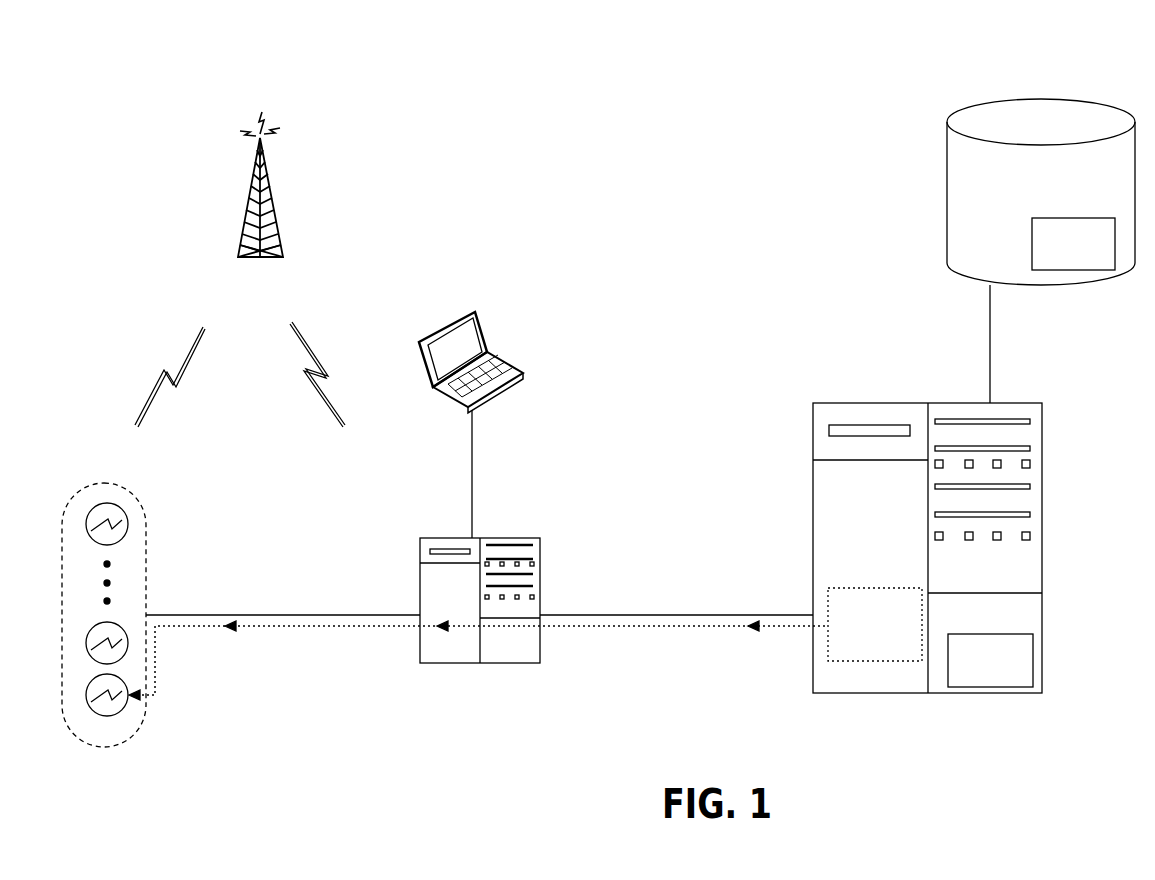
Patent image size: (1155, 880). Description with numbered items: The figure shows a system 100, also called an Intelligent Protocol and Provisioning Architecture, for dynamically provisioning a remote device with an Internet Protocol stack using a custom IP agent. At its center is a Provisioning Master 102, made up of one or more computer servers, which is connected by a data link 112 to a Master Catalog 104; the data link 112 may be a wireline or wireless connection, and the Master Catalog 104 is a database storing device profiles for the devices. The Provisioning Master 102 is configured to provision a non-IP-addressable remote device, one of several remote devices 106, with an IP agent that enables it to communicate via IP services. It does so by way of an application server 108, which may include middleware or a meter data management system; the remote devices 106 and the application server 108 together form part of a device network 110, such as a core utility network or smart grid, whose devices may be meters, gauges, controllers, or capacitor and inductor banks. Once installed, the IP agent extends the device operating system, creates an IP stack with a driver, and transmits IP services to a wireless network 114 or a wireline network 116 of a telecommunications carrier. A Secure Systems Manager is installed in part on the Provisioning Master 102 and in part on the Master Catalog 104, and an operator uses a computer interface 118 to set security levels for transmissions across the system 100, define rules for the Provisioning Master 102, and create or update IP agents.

The system 100 is at (280, 54).
The Provisioning Master 102 is at (813, 403).
The Master Catalog 104 is at (947, 190).
The remote devices 106 is at (122, 510).
The application server 108 is at (540, 590).
The device network 110 is at (380, 752).
The data link 112 is at (990, 372).
The wireless network 114 is at (200, 186).
The wireline network 116 is at (283, 615).
The computer interface 118 is at (442, 326).